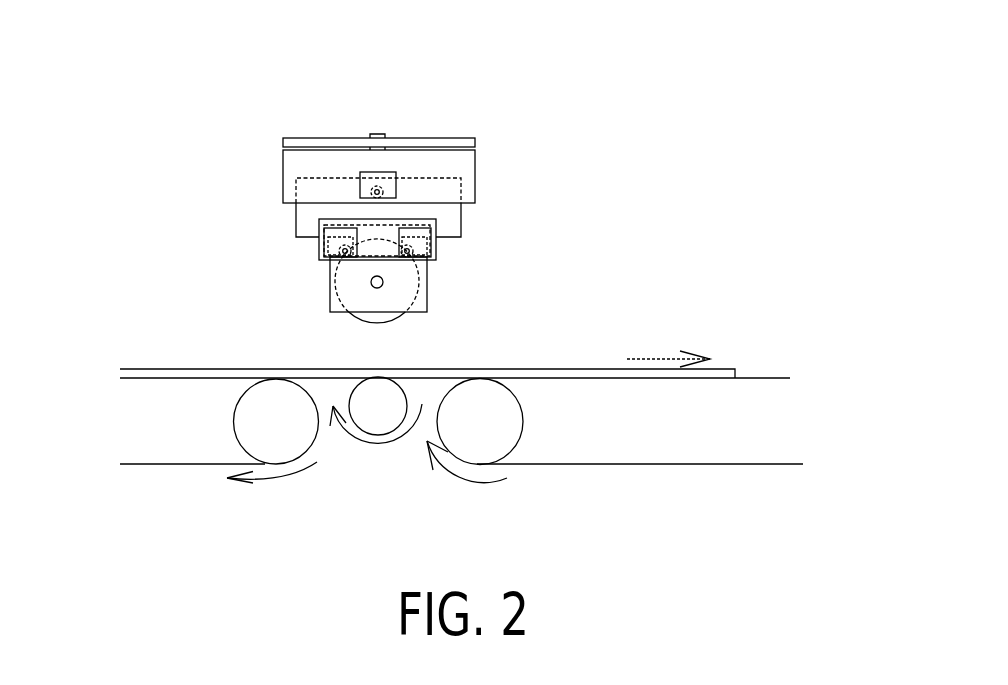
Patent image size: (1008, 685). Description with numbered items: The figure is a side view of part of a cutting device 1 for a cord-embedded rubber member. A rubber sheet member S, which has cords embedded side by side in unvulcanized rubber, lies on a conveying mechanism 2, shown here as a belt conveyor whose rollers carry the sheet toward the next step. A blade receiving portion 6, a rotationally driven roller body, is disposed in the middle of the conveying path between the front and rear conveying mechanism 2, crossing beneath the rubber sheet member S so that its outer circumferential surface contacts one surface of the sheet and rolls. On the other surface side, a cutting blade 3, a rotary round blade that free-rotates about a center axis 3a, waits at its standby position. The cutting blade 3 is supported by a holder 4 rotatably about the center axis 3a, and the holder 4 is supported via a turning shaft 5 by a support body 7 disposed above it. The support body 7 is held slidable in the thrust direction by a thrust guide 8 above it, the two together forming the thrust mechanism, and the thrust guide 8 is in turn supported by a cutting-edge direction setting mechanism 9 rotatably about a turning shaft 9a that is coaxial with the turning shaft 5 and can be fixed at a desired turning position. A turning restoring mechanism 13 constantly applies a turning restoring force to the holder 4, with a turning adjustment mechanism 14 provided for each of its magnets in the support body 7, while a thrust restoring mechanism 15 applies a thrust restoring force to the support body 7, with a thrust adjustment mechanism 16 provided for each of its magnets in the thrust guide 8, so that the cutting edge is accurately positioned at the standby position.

The cutting device 1 is at (240, 148).
The conveying mechanism 2 is at (167, 465).
The cutting blade 3 is at (376, 323).
The center axis 3a is at (372, 289).
The holder 4 is at (328, 298).
The turning shaft 5 is at (382, 221).
The blade receiving portion 6 is at (367, 421).
The support body 7 is at (452, 222).
The thrust guide 8 is at (466, 170).
The cutting-edge direction setting mechanism 9 is at (348, 137).
The turning shaft 9a is at (369, 134).
The turning restoring mechanism 13 is at (340, 256).
The turning adjustment mechanism 14 is at (324, 249).
The thrust restoring mechanism 15 is at (370, 191).
The thrust adjustment mechanism 16 is at (389, 175).
The rubber sheet member S is at (565, 378).